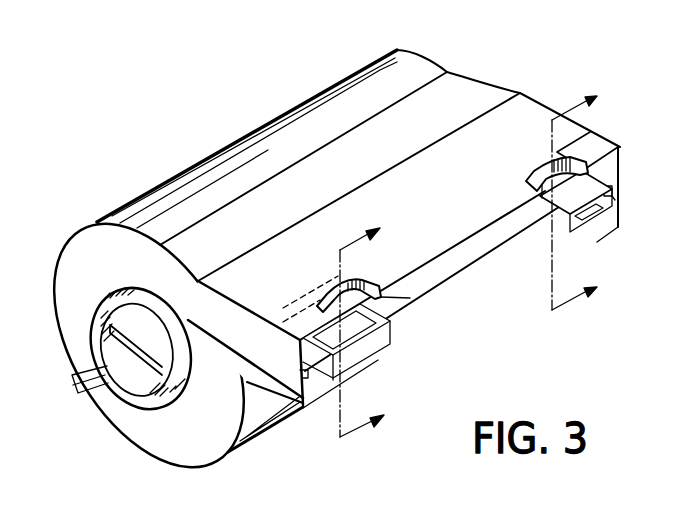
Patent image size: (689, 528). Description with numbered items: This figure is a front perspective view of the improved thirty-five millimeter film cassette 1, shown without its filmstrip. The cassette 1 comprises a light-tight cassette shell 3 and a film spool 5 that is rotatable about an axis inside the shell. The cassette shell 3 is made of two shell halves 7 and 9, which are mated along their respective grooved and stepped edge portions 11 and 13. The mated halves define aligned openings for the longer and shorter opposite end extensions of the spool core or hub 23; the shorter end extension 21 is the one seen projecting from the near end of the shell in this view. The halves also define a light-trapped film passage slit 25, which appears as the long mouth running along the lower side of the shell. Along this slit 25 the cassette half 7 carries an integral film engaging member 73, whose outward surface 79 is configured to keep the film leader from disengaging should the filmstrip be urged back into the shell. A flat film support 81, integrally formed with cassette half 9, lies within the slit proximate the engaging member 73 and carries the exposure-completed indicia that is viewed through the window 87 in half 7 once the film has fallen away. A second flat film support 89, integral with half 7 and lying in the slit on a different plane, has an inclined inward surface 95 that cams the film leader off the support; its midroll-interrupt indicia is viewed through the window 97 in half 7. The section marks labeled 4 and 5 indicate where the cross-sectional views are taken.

The film cassette 1 is at (229, 128).
The cassette shell 3 is at (114, 208).
The shell half 7 is at (313, 101).
The shell half 9 is at (254, 437).
The grooved and stepped edge portion 11 is at (300, 372).
The grooved and stepped edge portion 13 is at (307, 380).
The shorter end extension 21 is at (141, 400).
The spool core or hub 23 is at (182, 392).
The film passage slit 25 is at (471, 270).
The film engaging member 73 is at (530, 199).
The outward surface 79 is at (534, 184).
The flat film support 81 is at (566, 224).
The window 87 is at (582, 160).
The flat film support 89 is at (372, 328).
The inward surface 95 is at (288, 328).
The window 97 is at (362, 299).
The section line 4- 4 is at (370, 324).
The film spool 5 is at (583, 196).